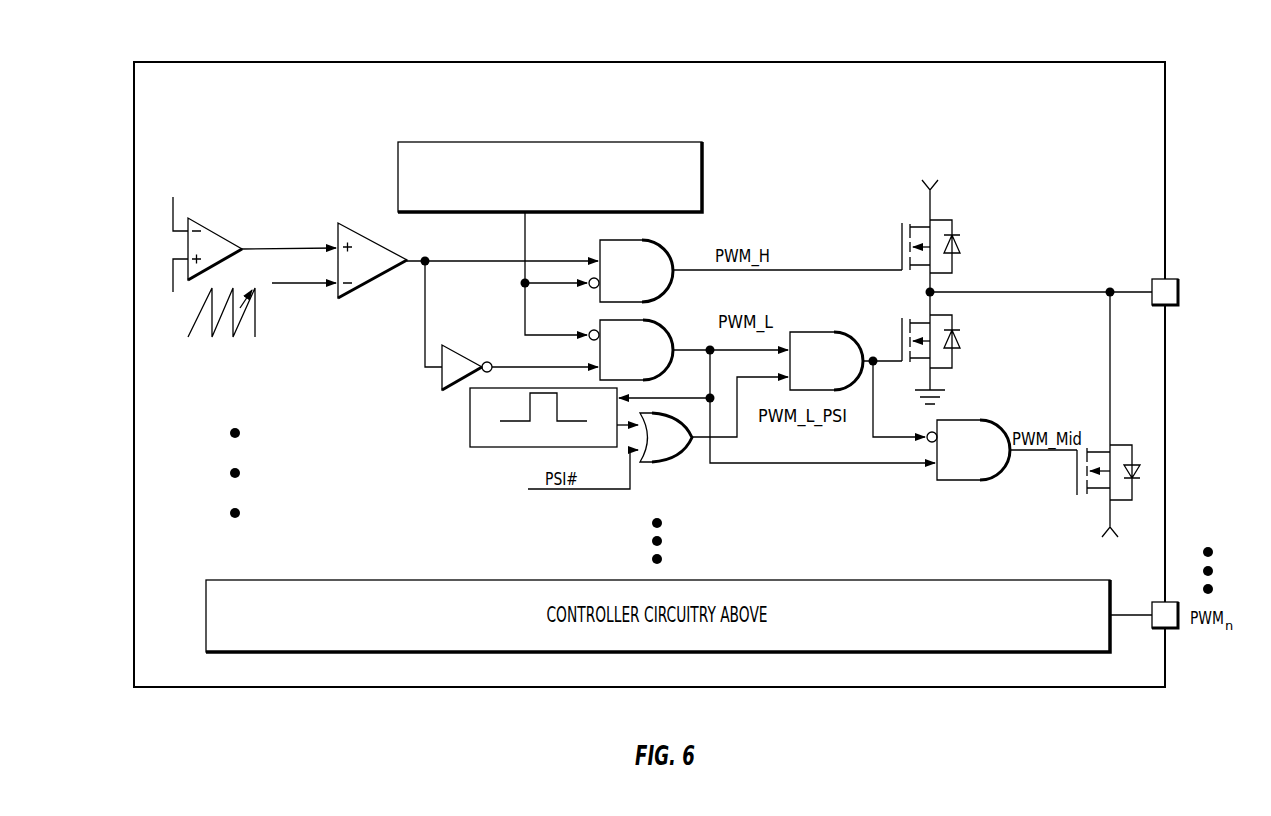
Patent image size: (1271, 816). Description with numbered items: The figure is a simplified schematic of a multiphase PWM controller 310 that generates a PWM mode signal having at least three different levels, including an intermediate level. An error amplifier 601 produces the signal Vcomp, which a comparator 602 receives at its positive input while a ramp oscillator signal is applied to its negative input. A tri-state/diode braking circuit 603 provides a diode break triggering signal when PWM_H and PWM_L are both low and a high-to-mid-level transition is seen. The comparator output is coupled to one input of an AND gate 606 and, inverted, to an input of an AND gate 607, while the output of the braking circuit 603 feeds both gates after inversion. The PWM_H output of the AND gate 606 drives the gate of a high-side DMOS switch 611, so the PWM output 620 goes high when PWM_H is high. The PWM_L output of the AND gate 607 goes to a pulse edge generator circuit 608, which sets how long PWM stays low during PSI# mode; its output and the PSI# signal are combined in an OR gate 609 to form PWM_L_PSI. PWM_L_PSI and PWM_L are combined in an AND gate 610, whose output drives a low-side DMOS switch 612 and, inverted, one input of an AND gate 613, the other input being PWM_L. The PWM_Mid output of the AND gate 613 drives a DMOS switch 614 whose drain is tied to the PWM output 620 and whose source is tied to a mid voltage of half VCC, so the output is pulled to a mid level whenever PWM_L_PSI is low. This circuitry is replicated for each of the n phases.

The PWM controller 310 is at (430, 704).
The error amplifier 601 is at (212, 228).
The comparator 602 is at (366, 233).
The tri-state/diode braking circuit 603 is at (702, 168).
The AND gate 606 is at (662, 241).
The AND gate 607 is at (660, 322).
The pulse edge generator circuit 608 is at (522, 447).
The OR gate 609 is at (667, 463).
The AND gate 610 is at (797, 332).
The DMOS switch 611 is at (884, 251).
The DMOS switch 612 is at (890, 337).
The AND gate 613 is at (978, 482).
The DMOS switch 614 is at (1096, 432).
The PWM output 620 is at (1168, 278).